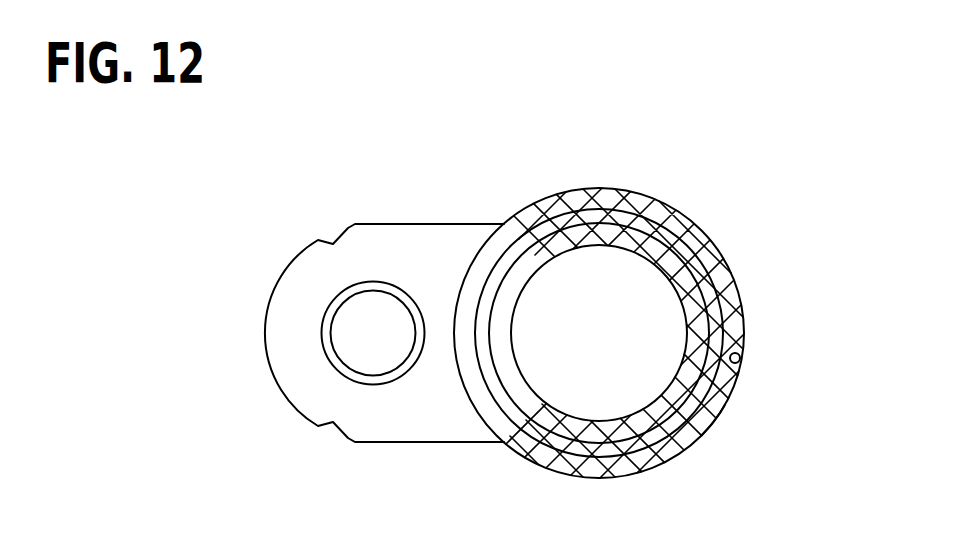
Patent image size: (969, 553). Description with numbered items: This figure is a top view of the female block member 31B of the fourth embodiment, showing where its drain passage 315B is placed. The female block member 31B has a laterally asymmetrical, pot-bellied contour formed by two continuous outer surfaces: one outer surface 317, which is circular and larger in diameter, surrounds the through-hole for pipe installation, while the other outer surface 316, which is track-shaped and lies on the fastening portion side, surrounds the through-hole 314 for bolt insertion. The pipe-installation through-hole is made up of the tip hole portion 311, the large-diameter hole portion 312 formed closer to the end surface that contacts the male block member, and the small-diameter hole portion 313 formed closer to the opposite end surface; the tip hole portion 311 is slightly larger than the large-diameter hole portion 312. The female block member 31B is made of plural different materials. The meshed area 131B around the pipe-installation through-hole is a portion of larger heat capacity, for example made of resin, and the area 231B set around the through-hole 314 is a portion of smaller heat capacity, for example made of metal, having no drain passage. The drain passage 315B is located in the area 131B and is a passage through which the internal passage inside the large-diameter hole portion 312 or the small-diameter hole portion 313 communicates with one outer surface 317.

The female block member 31B is at (262, 288).
The area 231B is at (403, 250).
The tip hole portion 311 is at (642, 216).
The large-diameter hole portion 312 is at (675, 431).
The small-diameter hole portion 313 is at (688, 331).
The through-hole 314 is at (341, 366).
The drain passage 315B is at (740, 359).
The other outer surface 316 is at (388, 444).
The one outer surface 317 is at (714, 421).
The area 131B is at (706, 238).